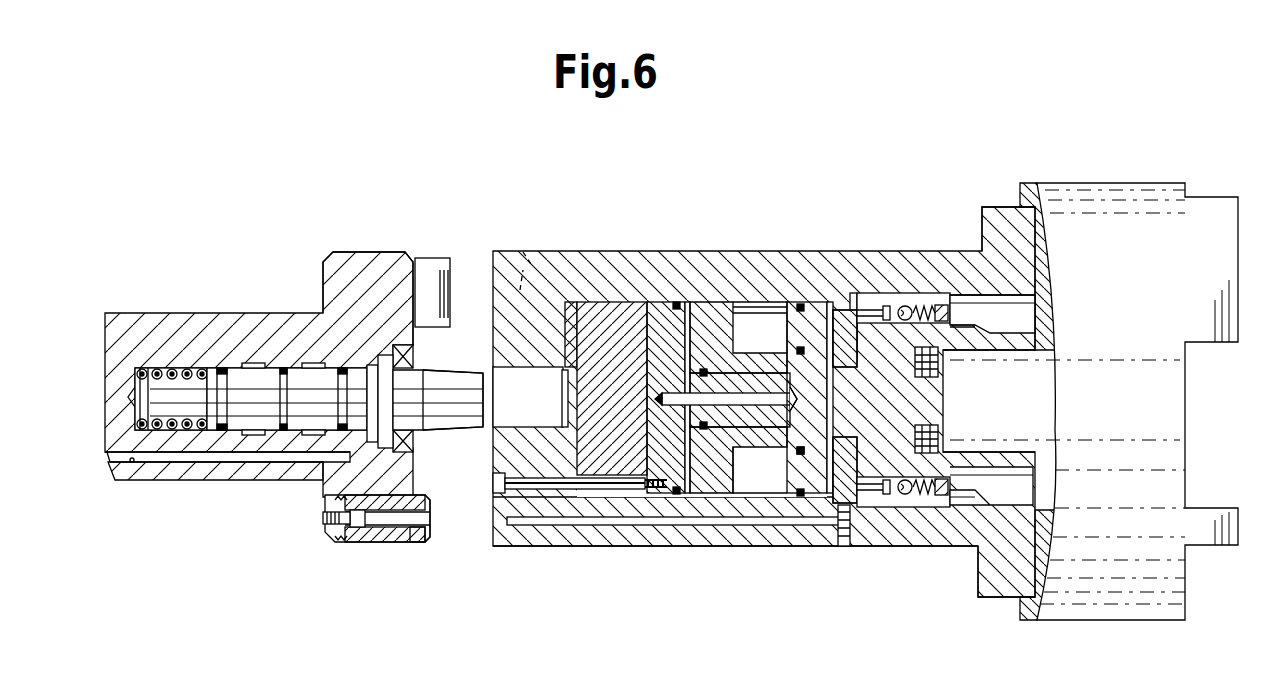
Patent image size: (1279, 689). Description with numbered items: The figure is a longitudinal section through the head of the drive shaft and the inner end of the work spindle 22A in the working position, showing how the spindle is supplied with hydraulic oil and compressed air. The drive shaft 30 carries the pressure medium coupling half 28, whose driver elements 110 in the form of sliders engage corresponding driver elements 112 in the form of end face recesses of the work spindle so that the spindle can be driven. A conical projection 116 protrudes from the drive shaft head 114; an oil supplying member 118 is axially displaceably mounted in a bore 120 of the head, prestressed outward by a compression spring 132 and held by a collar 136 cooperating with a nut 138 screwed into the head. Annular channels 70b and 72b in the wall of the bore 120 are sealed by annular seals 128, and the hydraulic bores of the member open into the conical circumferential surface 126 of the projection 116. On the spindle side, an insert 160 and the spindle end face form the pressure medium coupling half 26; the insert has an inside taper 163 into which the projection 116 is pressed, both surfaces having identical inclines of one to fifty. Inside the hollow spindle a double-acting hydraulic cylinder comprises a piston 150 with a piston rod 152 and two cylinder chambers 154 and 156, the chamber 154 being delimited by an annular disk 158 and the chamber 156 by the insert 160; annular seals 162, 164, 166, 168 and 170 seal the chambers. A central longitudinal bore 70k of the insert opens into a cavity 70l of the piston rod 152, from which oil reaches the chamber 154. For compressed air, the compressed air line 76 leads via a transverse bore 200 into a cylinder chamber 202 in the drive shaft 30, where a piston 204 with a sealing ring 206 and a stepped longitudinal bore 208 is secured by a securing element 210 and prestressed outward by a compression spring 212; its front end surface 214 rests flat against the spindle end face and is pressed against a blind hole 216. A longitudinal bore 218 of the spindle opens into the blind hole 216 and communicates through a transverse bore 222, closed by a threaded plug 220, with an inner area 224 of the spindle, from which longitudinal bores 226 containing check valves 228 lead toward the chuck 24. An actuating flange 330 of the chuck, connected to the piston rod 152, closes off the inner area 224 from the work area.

The chuck 24 is at (1082, 183).
The pressure medium coupling half 26 is at (537, 546).
The pressure medium coupling half 28 is at (375, 252).
The drive shaft 30 is at (120, 325).
The annular channel 70b is at (312, 363).
The central longitudinal bore 70k is at (748, 395).
The cavity 70l is at (845, 310).
The annular channel 72b is at (255, 363).
The compressed air line 76 is at (128, 463).
The driver elements 110 is at (430, 258).
The driver elements 112 is at (523, 262).
The drive shaft head 114 is at (290, 483).
The conical projection 116 is at (445, 377).
The oil supplying member 118 is at (237, 376).
The bore 120 is at (180, 368).
The conical circumferential surface 126 is at (480, 365).
The annular seals 128 is at (262, 435).
The compression spring 132 is at (143, 370).
The collar 136 is at (325, 515).
The nut 138 is at (400, 345).
The piston 150 is at (720, 470).
The piston rod 152 is at (925, 298).
The cylinder chamber 154 is at (775, 320).
The cylinder chamber 156 is at (700, 460).
The annular disk 158 is at (825, 483).
The insert 160 is at (590, 302).
The annular seal 162 is at (678, 302).
The inside taper 163 is at (507, 410).
The annular seal 164 is at (706, 305).
The annular seal 166 is at (718, 420).
The annular seal 168 is at (800, 302).
The annular seal 170 is at (790, 450).
The transverse bore 200 is at (343, 513).
The cylinder chamber 202 is at (347, 540).
The piston 204 is at (422, 542).
The sealing ring 206 is at (400, 542).
The stepped longitudinal bore 208 is at (428, 518).
The securing element 210 is at (352, 500).
The compression spring 212 is at (358, 542).
The front end surface 214 is at (427, 495).
The blind hole 216 is at (493, 535).
The longitudinal bore 218 is at (607, 528).
The threaded plug 220 is at (843, 528).
The transverse bore 222 is at (880, 490).
The inner area 224 is at (886, 305).
The longitudinal bores 226 is at (982, 253).
The check valves 228 is at (1040, 250).
The actuating flange 330 is at (1010, 580).
The work spindle 22A is at (795, 300).